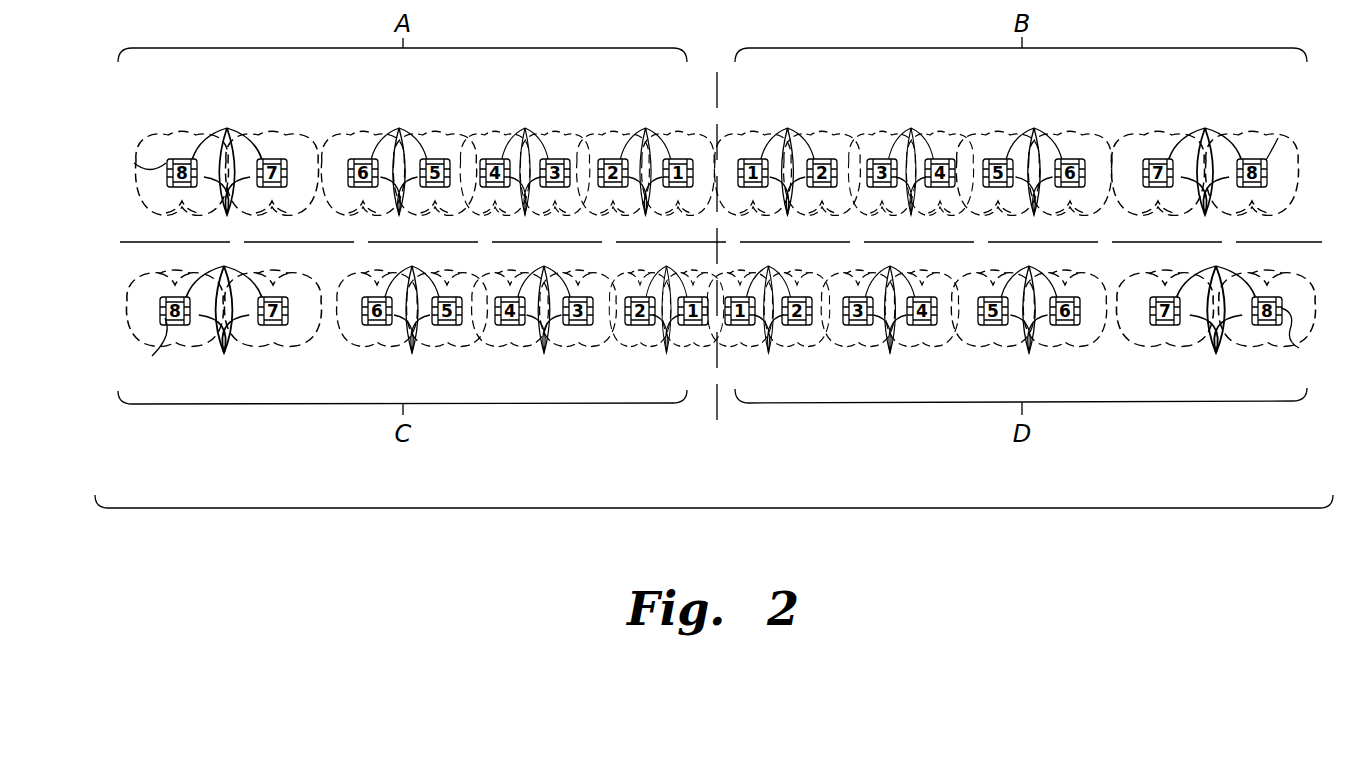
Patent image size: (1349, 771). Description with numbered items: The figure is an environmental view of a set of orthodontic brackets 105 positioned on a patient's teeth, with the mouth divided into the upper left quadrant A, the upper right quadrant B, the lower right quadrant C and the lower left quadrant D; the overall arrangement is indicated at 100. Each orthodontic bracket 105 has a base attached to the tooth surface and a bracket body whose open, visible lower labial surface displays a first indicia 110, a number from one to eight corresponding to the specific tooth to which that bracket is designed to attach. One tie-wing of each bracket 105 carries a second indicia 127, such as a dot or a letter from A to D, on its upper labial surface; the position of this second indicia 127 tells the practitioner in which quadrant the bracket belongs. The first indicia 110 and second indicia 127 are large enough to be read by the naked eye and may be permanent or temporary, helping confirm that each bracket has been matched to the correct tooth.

The orthodontic appliance system 100 is at (717, 508).
The orthodontic bracket 105 is at (720, 216).
The first indicia 110 is at (720, 280).
The second indicia 127 is at (714, 244).